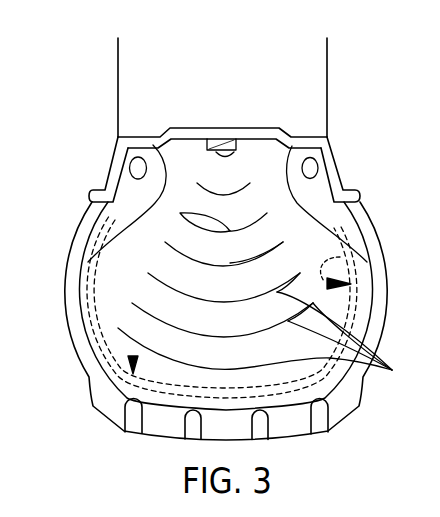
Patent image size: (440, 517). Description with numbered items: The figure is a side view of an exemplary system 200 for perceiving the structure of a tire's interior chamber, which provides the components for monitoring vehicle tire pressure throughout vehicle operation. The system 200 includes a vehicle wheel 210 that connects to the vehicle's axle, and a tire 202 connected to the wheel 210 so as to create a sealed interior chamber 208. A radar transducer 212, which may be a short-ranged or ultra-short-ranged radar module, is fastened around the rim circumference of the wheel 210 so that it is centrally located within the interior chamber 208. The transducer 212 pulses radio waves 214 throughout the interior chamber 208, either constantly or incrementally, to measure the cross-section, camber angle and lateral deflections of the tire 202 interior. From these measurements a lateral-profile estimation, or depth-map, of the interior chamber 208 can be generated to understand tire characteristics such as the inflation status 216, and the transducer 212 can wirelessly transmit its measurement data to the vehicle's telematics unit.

The system 200 is at (76, 182).
The tire 202 is at (66, 322).
The interior chamber 208 is at (122, 285).
The vehicle wheel 210 is at (112, 154).
The radar transducer 212 is at (222, 139).
The radio waves 214 is at (180, 214).
The inflation status 216 is at (100, 352).